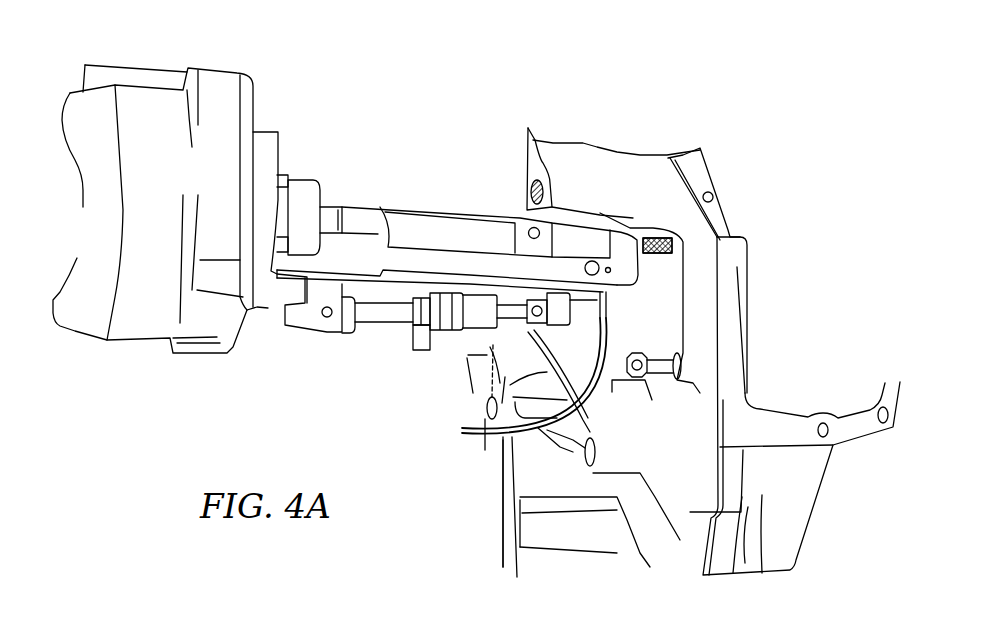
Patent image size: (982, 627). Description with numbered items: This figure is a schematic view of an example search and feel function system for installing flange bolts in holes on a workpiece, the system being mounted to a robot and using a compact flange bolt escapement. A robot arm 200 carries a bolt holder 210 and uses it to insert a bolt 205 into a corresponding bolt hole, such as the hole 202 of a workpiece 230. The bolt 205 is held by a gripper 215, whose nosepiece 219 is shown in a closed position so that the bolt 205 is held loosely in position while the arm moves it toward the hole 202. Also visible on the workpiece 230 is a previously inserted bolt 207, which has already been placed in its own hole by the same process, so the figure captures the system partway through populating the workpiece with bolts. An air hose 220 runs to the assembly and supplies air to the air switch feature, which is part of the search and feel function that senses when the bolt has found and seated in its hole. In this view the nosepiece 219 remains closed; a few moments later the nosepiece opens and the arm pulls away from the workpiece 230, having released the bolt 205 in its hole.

The robot arm 200 is at (178, 125).
The hole 202 is at (490, 415).
The bolt 205 is at (660, 242).
The previously inserted bolt 207 is at (643, 380).
The bolt holder 210 is at (368, 238).
The gripper 215 is at (600, 210).
The nosepiece 219 is at (631, 245).
The air hose 220 is at (537, 425).
The workpiece 230 is at (773, 536).